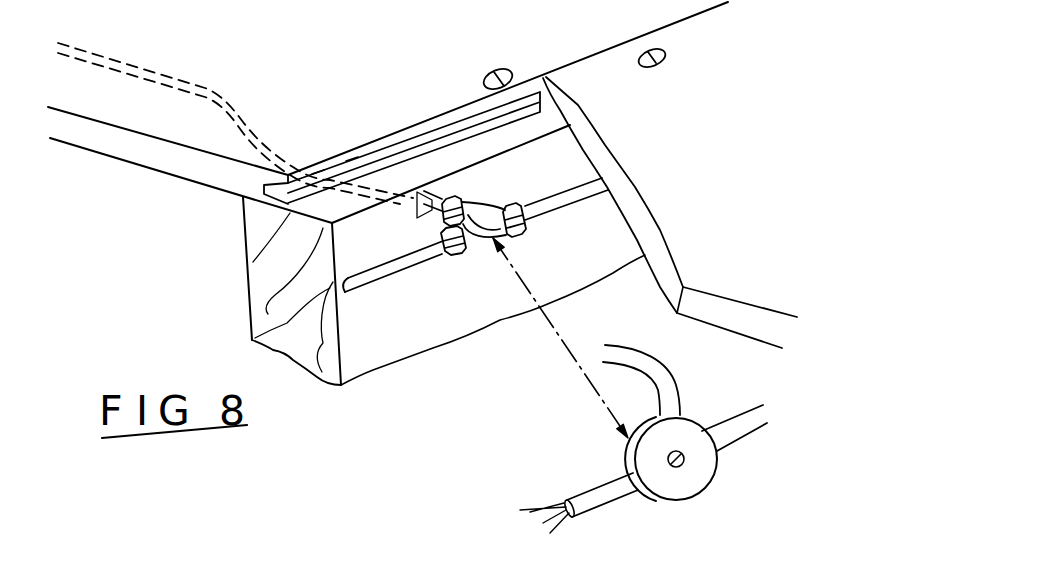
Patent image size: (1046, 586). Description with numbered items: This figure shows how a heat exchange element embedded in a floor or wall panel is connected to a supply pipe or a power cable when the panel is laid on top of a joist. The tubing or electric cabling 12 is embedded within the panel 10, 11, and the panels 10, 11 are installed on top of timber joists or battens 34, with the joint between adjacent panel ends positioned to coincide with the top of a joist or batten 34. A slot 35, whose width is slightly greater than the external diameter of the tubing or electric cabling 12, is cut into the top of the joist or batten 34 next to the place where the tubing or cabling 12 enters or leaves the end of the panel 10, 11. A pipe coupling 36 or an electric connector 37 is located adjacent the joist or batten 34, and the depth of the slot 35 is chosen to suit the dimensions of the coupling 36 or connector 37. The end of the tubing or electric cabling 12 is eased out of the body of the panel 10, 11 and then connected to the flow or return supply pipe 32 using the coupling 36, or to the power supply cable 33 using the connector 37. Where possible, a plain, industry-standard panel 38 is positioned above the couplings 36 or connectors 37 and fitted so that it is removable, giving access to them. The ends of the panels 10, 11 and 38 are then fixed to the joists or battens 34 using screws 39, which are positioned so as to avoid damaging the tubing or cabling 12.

The panel 10 is at (388, 127).
The panel 11 is at (145, 152).
The tubing or electric cabling 12 is at (210, 88).
The flow or return supply pipe 32 is at (383, 272).
The power supply cable 33 is at (600, 495).
The timber joist or batten 34 is at (267, 313).
The slot 35 is at (425, 178).
The pipe coupling 36 is at (483, 220).
The electric connector 37 is at (698, 463).
The plain industry-standard panel 38 is at (670, 212).
The screws 39 is at (647, 55).